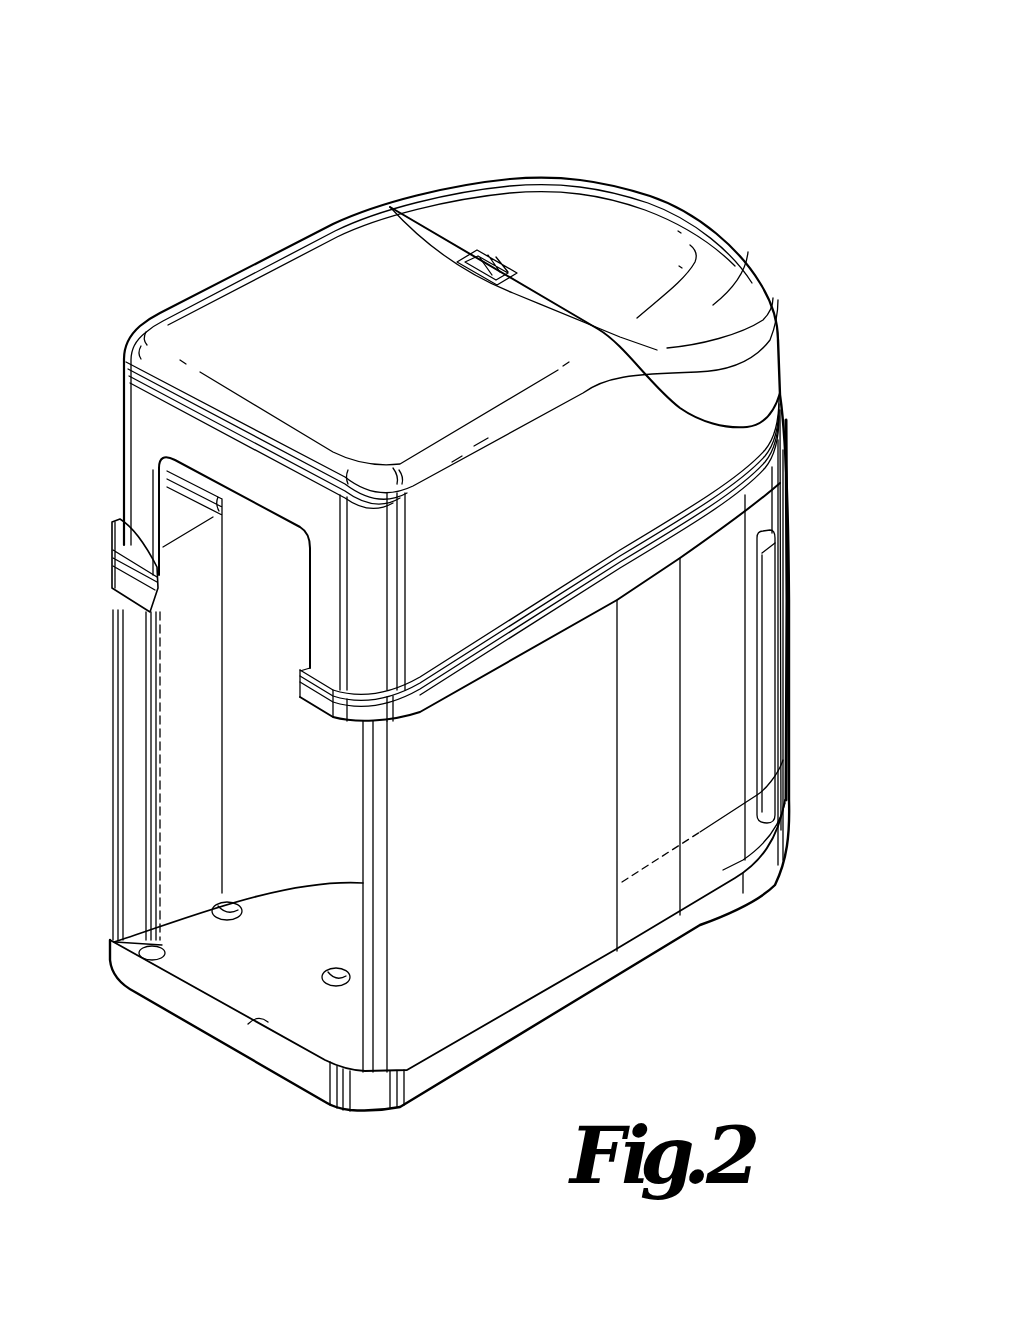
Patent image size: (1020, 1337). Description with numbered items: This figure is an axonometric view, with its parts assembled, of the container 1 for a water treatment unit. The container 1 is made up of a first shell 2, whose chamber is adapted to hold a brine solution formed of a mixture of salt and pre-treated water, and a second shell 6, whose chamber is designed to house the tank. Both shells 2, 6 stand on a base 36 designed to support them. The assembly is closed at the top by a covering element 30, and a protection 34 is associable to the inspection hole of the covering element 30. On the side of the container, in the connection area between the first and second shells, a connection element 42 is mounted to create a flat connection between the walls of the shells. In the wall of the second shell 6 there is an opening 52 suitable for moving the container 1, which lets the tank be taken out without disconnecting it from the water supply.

The container 1 is at (717, 155).
The first shell 2 is at (806, 580).
The second shell 6 is at (93, 722).
The covering element 30 is at (256, 250).
The protection 34 is at (544, 170).
The base 36 is at (274, 1084).
The connection element 42 is at (641, 836).
The opening 52 is at (247, 812).